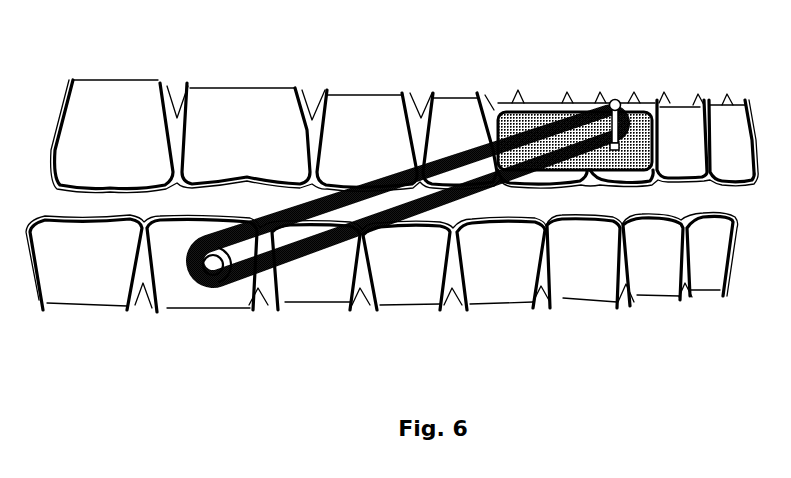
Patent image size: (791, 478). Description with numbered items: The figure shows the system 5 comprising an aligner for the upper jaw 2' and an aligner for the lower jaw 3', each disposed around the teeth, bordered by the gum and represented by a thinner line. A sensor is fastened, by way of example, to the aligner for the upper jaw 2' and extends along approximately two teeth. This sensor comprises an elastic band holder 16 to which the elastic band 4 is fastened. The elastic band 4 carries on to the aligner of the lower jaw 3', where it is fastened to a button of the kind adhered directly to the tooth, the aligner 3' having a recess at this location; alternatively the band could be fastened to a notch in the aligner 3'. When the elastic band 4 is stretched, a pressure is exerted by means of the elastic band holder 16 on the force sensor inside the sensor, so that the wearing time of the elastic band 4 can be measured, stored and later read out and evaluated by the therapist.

The elastic band holder 16 is at (618, 102).
The elastic band 4 is at (509, 153).
The aligner for the upper jaw 2' is at (450, 71).
The aligner for the lower jaw 3' is at (413, 322).
The system 5 is at (657, 303).